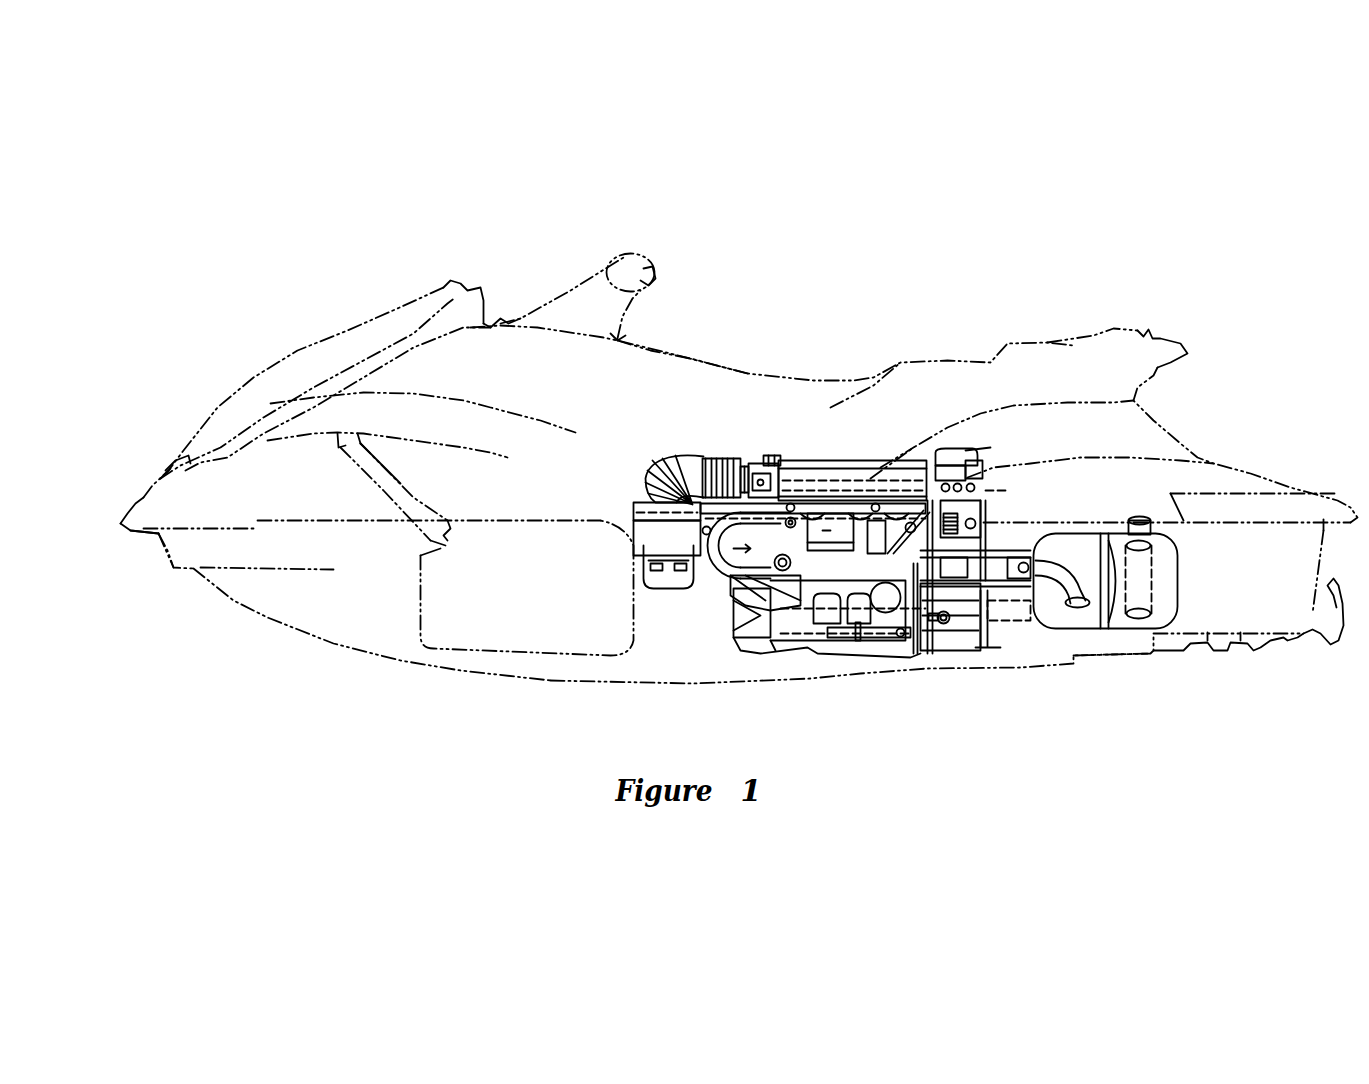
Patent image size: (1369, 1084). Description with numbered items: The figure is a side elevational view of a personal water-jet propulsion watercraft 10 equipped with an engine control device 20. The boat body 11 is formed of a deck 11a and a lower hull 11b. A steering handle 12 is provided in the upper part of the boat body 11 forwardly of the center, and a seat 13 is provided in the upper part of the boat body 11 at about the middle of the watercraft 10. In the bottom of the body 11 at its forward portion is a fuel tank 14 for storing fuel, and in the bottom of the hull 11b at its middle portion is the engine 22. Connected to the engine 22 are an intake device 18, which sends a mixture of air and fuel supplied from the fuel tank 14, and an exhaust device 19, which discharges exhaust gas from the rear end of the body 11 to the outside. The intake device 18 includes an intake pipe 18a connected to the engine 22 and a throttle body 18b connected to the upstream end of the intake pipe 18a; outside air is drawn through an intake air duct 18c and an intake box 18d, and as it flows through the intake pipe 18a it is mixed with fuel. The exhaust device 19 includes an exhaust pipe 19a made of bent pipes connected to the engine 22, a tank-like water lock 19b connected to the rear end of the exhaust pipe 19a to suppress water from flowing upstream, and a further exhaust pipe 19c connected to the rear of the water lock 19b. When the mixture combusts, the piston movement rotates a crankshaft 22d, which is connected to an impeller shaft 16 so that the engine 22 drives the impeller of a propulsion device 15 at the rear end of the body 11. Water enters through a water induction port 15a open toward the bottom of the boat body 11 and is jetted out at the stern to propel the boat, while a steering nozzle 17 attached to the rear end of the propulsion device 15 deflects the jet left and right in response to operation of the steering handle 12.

The personal water-jet propulsion watercraft 10 is at (873, 243).
The boat body 11 is at (103, 460).
The deck 11a is at (160, 466).
The lower hull 11b is at (158, 546).
The steering handle 12 is at (658, 270).
The seat 13 is at (853, 377).
The fuel tank 14 is at (463, 645).
The propulsion device 15 is at (1228, 653).
The water induction port 15a is at (1113, 657).
The impeller shaft 16 is at (1010, 622).
The steering nozzle 17 is at (1307, 648).
The intake device 18 is at (716, 450).
The intake pipe 18a is at (833, 477).
The throttle body 18b is at (757, 467).
The intake air duct 18c is at (413, 484).
The intake box 18d is at (633, 542).
The exhaust device 19 is at (1007, 532).
The exhaust pipe 19a is at (708, 570).
The water lock 19b is at (1080, 543).
The exhaust pipe 19c is at (1157, 527).
The engine control device 20 is at (877, 442).
The engine 22 is at (827, 658).
The crankshaft 22d is at (982, 650).